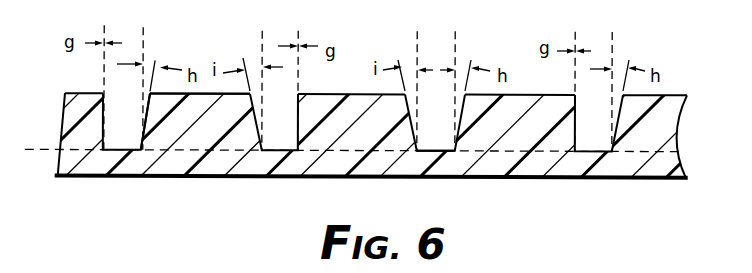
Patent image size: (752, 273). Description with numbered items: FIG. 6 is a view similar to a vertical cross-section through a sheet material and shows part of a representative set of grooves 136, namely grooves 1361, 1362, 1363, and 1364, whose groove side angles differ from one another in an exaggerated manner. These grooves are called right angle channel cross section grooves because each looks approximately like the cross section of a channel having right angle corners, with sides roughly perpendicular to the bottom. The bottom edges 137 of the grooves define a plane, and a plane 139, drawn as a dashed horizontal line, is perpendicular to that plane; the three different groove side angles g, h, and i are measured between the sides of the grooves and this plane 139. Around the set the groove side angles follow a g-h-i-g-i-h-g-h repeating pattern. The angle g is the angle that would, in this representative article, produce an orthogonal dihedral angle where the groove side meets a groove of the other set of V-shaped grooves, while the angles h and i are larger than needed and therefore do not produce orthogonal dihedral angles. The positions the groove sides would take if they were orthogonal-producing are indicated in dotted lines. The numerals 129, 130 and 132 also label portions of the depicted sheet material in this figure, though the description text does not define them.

The inclined side wall 129 is at (148, 93).
The end shoulder 130 is at (98, 97).
The land 132 is at (160, 102).
The set of grooves 136 is at (365, 168).
The groove 1361 is at (149, 98).
The groove 1362 is at (294, 151).
The groove 1363 is at (456, 151).
The groove 1364 is at (616, 118).
The bottom edges 137 is at (435, 148).
The plane 139 is at (27, 148).